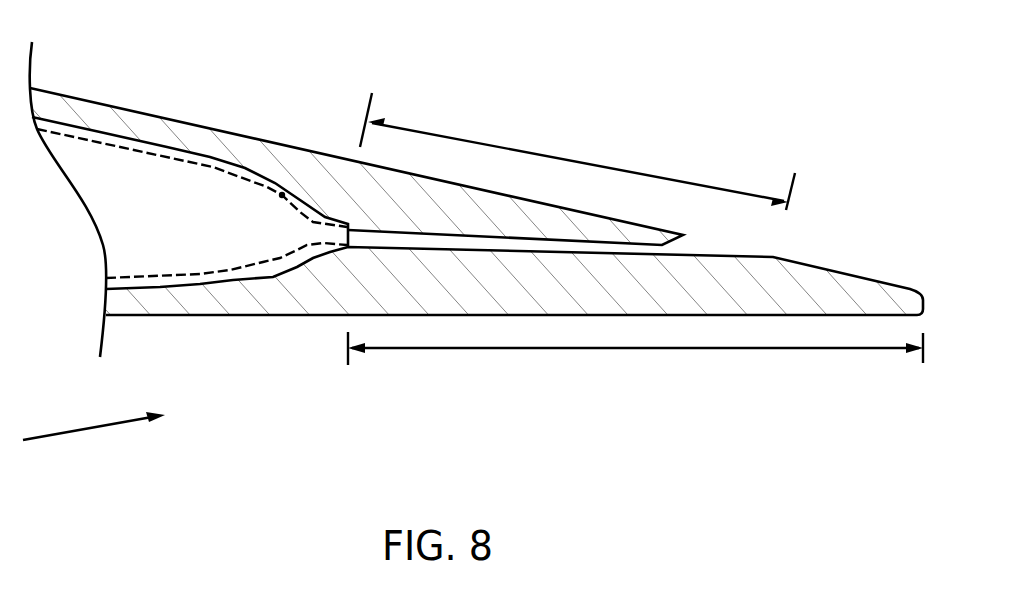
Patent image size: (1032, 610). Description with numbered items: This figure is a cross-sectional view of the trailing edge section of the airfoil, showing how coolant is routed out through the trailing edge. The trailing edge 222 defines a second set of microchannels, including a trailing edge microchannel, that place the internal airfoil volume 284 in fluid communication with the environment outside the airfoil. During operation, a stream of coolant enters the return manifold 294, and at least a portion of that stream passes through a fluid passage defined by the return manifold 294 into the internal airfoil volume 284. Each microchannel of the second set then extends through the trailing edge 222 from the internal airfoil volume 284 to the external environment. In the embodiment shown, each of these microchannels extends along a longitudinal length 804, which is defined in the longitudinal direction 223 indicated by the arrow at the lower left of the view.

The return manifold 294 is at (162, 157).
The internal airfoil volume 284 is at (282, 192).
The longitudinal length 804 is at (560, 152).
The trailing edge 222 is at (634, 350).
The longitudinal direction 223 is at (53, 435).